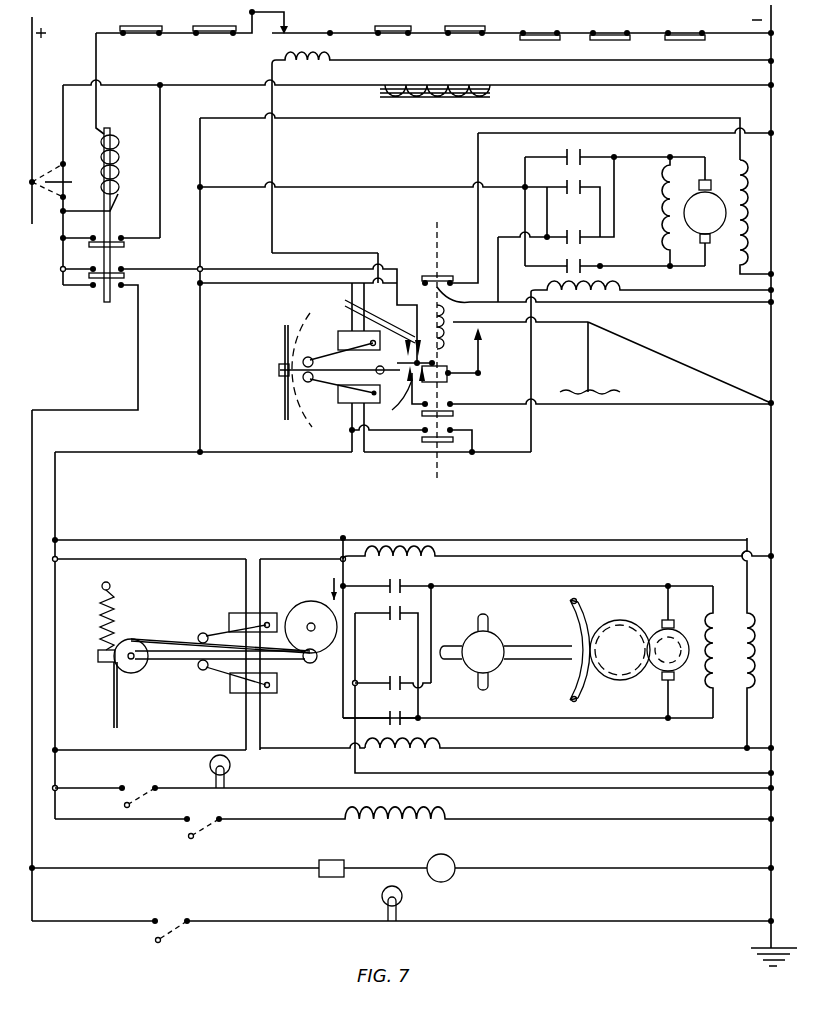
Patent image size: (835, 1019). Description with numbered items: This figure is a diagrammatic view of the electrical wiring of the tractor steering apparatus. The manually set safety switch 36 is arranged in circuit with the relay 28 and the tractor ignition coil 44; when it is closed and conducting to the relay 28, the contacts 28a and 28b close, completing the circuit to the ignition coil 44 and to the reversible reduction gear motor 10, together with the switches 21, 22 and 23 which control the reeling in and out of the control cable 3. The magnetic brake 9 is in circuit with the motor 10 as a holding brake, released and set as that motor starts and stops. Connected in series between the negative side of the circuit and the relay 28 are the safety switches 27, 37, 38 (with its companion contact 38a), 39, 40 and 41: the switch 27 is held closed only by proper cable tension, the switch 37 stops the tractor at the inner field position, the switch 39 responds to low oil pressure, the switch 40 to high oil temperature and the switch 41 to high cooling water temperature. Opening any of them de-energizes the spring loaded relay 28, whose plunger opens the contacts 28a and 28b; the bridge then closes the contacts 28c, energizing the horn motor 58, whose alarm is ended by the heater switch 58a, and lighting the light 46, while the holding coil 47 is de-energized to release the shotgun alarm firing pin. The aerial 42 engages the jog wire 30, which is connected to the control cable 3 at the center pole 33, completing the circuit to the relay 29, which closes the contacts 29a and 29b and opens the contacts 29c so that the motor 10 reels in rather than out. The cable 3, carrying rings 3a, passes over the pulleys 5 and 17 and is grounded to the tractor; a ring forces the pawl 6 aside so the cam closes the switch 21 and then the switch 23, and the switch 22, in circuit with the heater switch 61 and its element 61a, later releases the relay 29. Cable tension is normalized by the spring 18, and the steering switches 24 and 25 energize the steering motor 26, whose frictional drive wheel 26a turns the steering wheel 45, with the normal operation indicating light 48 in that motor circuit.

The control cable 3 is at (283, 352).
The ring 3a is at (302, 377).
The pulley 5 is at (304, 603).
The pawl 6 is at (276, 368).
The magnetic brake 9 is at (655, 202).
The reversible reduction gear motor 10 is at (720, 190).
The pulley 17 is at (140, 668).
The spring 18 is at (116, 603).
The switch 21 is at (338, 336).
The switch 22 is at (406, 382).
The switch 23 is at (352, 410).
The switch 24 is at (238, 613).
The switch 25 is at (238, 683).
The reversible reduction gear motor 26 is at (680, 625).
The frictional drive wheel 26a is at (628, 620).
The safety switch 27 is at (136, 38).
The relay 28 is at (118, 190).
The contacts 28a is at (124, 248).
The contacts 28b is at (96, 288).
The contacts 28c is at (120, 290).
The relay 29 is at (432, 300).
The contacts 29a is at (455, 395).
The contacts 29b is at (455, 433).
The contacts 29c is at (450, 292).
The jog wire 30 is at (548, 322).
The center pole 33 is at (629, 363).
The safety switch 36 is at (45, 200).
The switch 37 is at (212, 38).
The switch 38 is at (389, 36).
The contact 38a is at (470, 36).
The switch 39 is at (533, 31).
The switch 40 is at (603, 31).
The switch 41 is at (694, 13).
The aerial 42 is at (480, 355).
The tractor ignition coil 44 is at (430, 105).
The steering wheel 45 is at (532, 648).
The light 46 is at (381, 898).
The holding coil 47 is at (420, 822).
The normal operation indicating light 48 is at (231, 763).
The horn motor 58 is at (450, 880).
The heater switch 58a is at (316, 878).
The heater switch 61 is at (318, 38).
The armature 61a is at (363, 316).